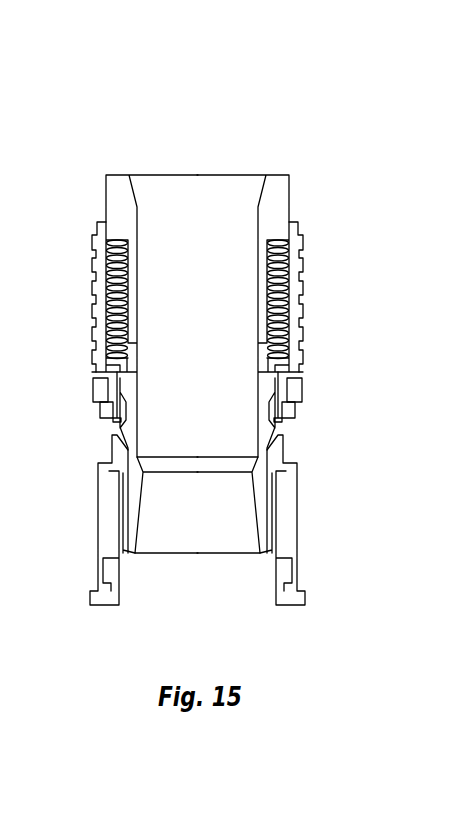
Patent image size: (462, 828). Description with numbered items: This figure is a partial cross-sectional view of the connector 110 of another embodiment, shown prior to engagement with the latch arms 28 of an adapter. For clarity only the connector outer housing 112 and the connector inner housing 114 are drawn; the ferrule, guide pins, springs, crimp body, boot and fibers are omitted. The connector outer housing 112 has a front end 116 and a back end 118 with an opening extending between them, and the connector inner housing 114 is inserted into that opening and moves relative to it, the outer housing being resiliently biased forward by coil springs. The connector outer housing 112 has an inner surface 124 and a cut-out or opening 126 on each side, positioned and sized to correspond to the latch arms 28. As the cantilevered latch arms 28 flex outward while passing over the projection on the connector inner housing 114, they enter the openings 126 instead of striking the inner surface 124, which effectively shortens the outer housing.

The connector 110 is at (313, 148).
The connector outer housing 112 is at (300, 261).
The back end 118 is at (297, 221).
The inner surface 124 is at (93, 386).
The opening 126 is at (100, 412).
The front end 116 is at (282, 423).
The latch arm 28 is at (290, 510).
The connector inner housing 114 is at (218, 543).